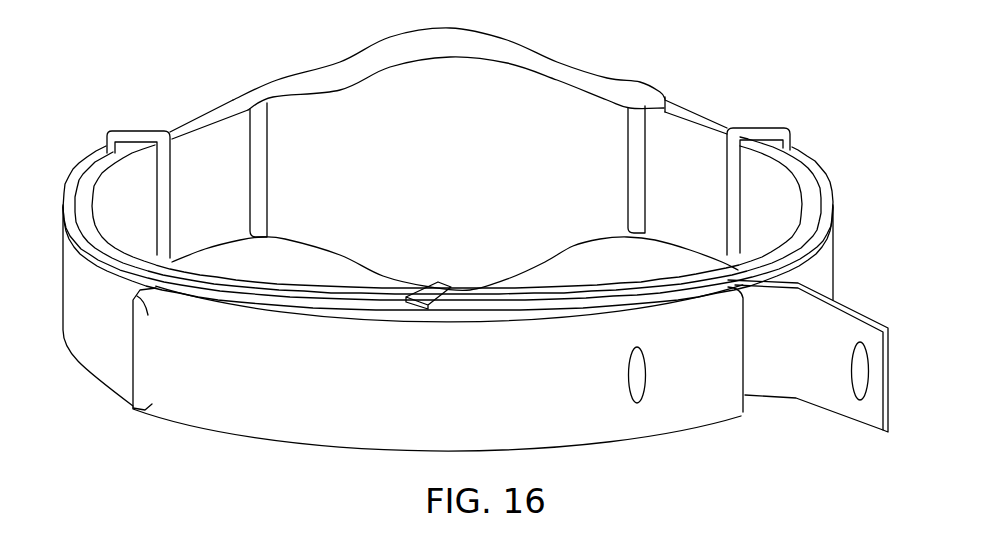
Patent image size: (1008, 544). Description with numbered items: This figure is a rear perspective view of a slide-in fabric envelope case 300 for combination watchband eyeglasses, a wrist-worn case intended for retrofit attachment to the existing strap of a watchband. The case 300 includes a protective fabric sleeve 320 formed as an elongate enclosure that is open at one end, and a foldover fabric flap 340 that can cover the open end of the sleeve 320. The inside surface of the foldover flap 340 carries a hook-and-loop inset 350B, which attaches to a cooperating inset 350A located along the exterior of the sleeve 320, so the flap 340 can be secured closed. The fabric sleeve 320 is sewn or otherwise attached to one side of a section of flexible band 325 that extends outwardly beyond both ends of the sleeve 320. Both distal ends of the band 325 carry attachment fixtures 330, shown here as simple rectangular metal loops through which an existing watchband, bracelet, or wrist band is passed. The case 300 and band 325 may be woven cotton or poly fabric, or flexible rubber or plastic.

The slide-in fabric envelope case 300 is at (469, 258).
The protective fabric sleeve 320 is at (268, 418).
The flexible band 325 is at (67, 182).
The attachment fixtures 330 is at (138, 127).
The foldover fabric flap 340 is at (881, 322).
The cooperating inset 350A is at (627, 392).
The hook-and-loop inset 350B is at (860, 400).